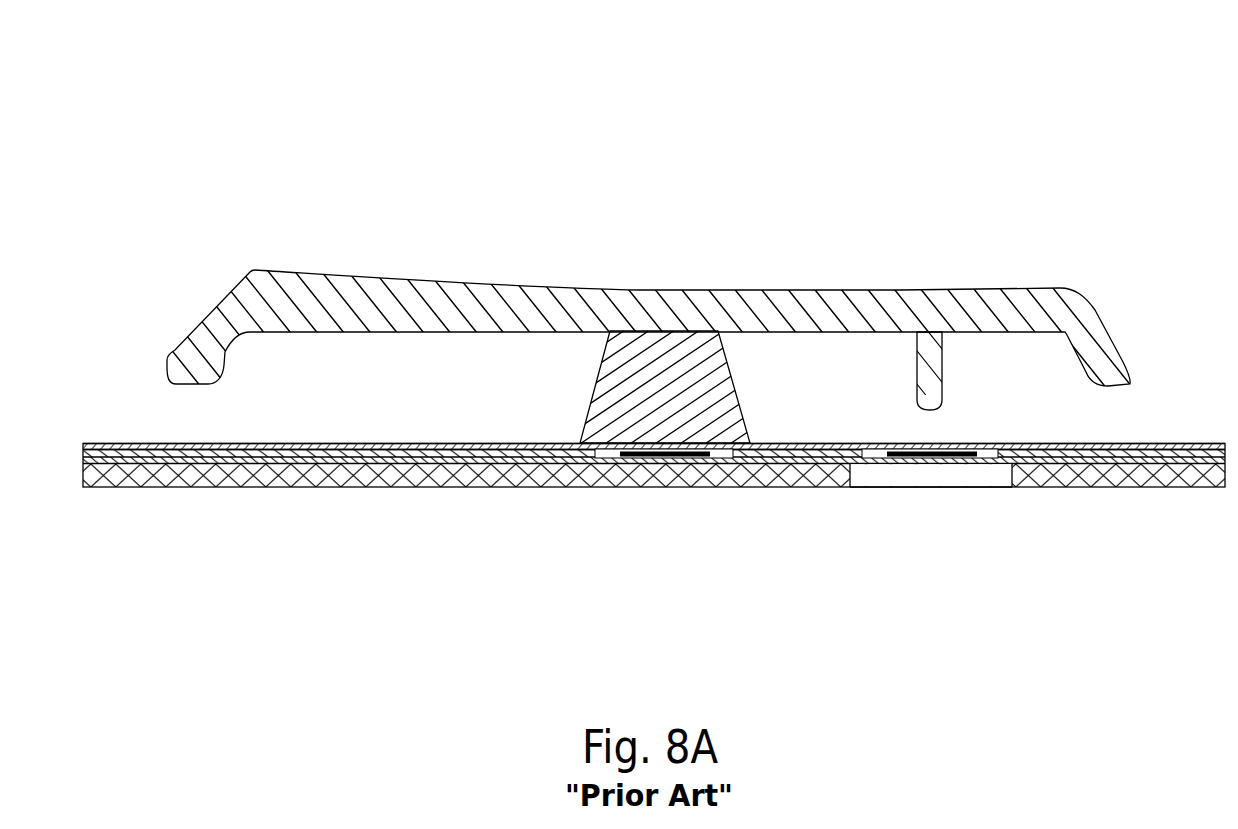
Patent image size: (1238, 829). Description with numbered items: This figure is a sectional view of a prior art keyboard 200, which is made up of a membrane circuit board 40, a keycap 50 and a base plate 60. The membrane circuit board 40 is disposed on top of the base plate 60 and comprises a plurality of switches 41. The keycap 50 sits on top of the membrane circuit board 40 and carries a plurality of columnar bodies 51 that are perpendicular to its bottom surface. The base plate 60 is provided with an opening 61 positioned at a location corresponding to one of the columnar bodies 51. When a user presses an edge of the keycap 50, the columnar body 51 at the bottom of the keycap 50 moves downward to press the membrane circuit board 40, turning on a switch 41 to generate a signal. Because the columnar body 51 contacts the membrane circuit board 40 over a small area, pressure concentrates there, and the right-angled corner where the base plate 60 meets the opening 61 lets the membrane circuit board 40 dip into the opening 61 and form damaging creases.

The keyboard 200 is at (1027, 145).
The keycap 50 is at (665, 308).
The columnar body 51 is at (937, 403).
The membrane circuit board 40 is at (1150, 444).
The switch 41 is at (908, 444).
The base plate 60 is at (626, 472).
The opening 61 is at (928, 478).